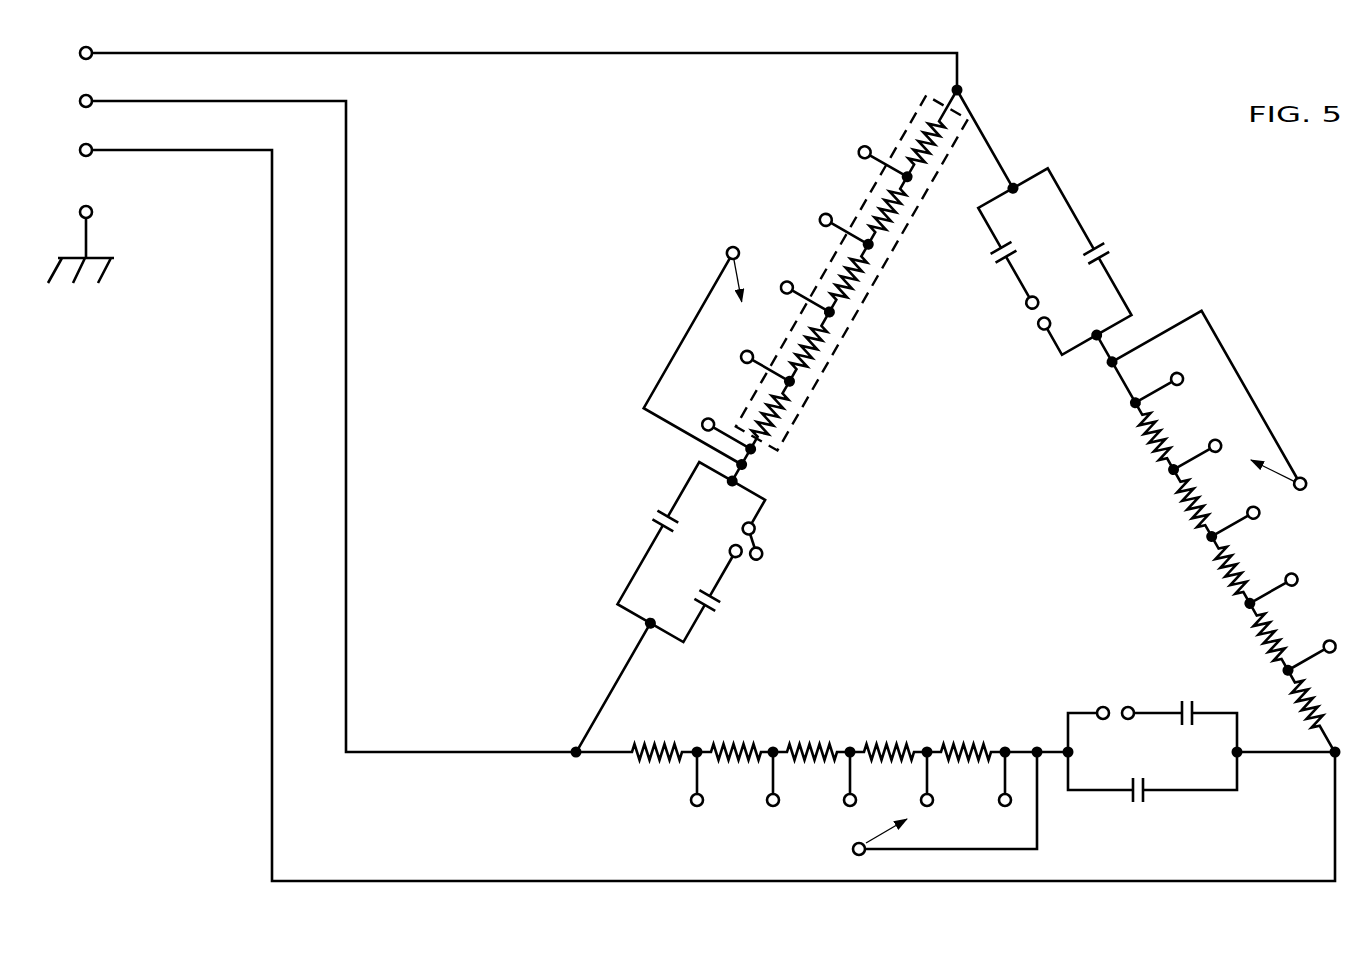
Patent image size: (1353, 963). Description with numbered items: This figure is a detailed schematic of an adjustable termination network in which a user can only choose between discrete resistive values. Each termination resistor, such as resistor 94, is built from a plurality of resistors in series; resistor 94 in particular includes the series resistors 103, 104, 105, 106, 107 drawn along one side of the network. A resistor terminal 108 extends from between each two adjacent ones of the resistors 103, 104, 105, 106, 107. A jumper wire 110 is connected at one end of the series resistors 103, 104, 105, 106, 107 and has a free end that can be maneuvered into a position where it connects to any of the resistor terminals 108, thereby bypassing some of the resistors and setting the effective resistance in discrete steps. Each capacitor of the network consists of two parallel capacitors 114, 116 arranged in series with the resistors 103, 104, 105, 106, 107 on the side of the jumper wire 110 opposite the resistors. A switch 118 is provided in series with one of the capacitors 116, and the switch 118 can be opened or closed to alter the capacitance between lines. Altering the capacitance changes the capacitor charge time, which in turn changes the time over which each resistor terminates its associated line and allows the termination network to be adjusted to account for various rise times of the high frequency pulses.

The resistor 94 is at (903, 132).
The series resistor 103 is at (928, 152).
The series resistor 104 is at (887, 222).
The series resistor 105 is at (852, 288).
The series resistor 106 is at (812, 357).
The series resistor 107 is at (780, 412).
The resistor terminal 108 is at (822, 215).
The jumper wire 110 is at (698, 310).
The capacitor 114 is at (657, 508).
The capacitor 116 is at (717, 596).
The switch 118 is at (752, 537).